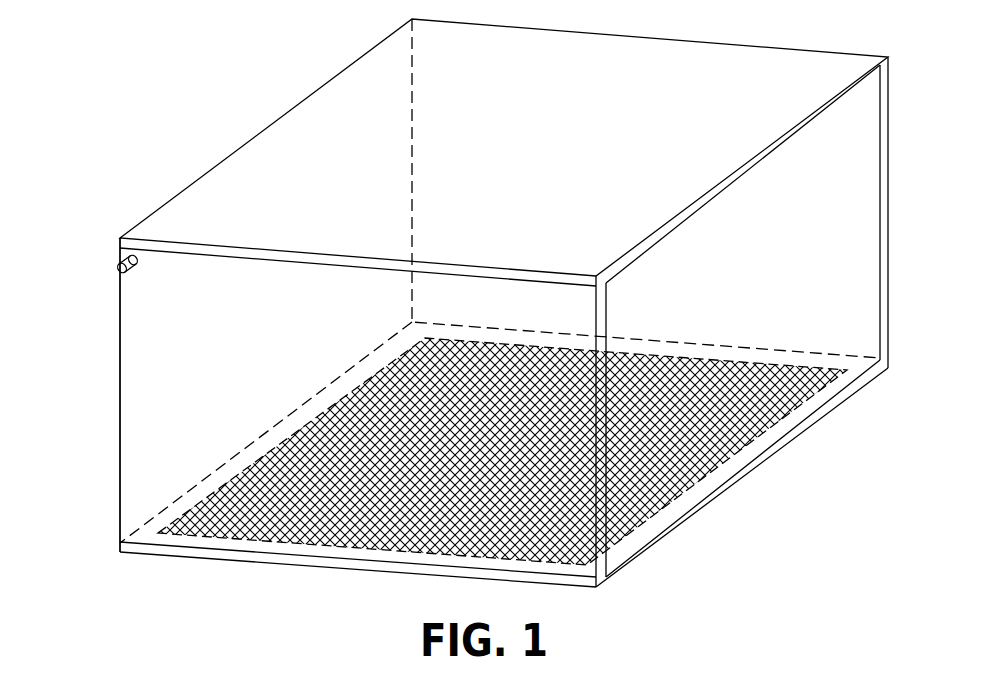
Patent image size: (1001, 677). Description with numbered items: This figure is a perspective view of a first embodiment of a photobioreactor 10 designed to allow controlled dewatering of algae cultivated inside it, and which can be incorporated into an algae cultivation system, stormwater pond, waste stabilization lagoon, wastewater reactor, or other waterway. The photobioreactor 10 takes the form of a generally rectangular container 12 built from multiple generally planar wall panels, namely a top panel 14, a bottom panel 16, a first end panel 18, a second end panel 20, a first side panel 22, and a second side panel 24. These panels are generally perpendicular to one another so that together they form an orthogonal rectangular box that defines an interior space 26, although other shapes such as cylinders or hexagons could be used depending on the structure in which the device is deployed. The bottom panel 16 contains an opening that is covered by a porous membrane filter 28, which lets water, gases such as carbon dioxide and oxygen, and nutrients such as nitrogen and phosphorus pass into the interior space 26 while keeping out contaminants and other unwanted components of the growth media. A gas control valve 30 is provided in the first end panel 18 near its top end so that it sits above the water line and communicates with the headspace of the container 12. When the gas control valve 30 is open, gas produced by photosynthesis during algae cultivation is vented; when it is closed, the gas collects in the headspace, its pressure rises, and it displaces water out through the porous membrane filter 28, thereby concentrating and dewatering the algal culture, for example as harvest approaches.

The photobioreactor 10 is at (106, 84).
The container 12 is at (100, 342).
The top panel 14 is at (843, 70).
The bottom panel 16 is at (700, 515).
The first end panel 18 is at (140, 498).
The second end panel 20 is at (888, 338).
The first side panel 22 is at (119, 405).
The second side panel 24 is at (860, 247).
The interior space 26 is at (848, 305).
The porous membrane filter 28 is at (300, 448).
The gas control valve 30 is at (134, 262).